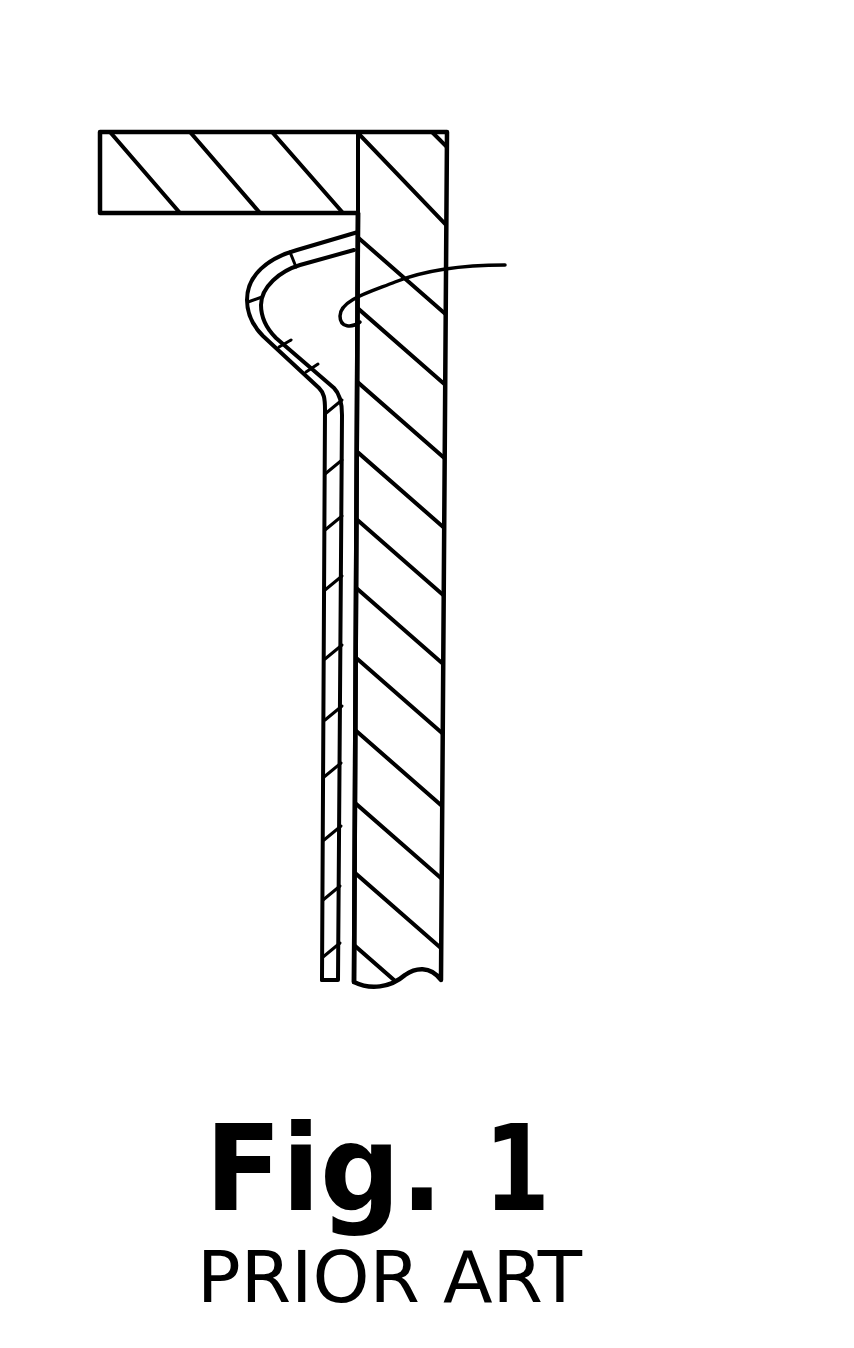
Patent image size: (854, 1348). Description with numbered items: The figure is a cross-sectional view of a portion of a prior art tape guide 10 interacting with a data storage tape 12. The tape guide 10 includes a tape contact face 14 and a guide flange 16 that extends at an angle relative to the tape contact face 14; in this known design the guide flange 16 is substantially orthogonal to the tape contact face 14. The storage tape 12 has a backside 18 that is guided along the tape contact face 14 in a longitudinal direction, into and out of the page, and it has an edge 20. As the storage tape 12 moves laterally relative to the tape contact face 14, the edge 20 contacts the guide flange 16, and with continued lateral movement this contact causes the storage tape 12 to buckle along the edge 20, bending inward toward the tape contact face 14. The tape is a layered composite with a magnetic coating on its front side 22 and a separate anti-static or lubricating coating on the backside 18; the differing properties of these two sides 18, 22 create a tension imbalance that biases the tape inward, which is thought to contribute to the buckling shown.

The tape guide 10 is at (392, 514).
The data storage tape 12 is at (214, 606).
The tape contact face 14 is at (461, 272).
The guide flange 16 is at (202, 172).
The backside 18 is at (343, 555).
The edge 20 is at (359, 135).
The front side 22 is at (327, 484).